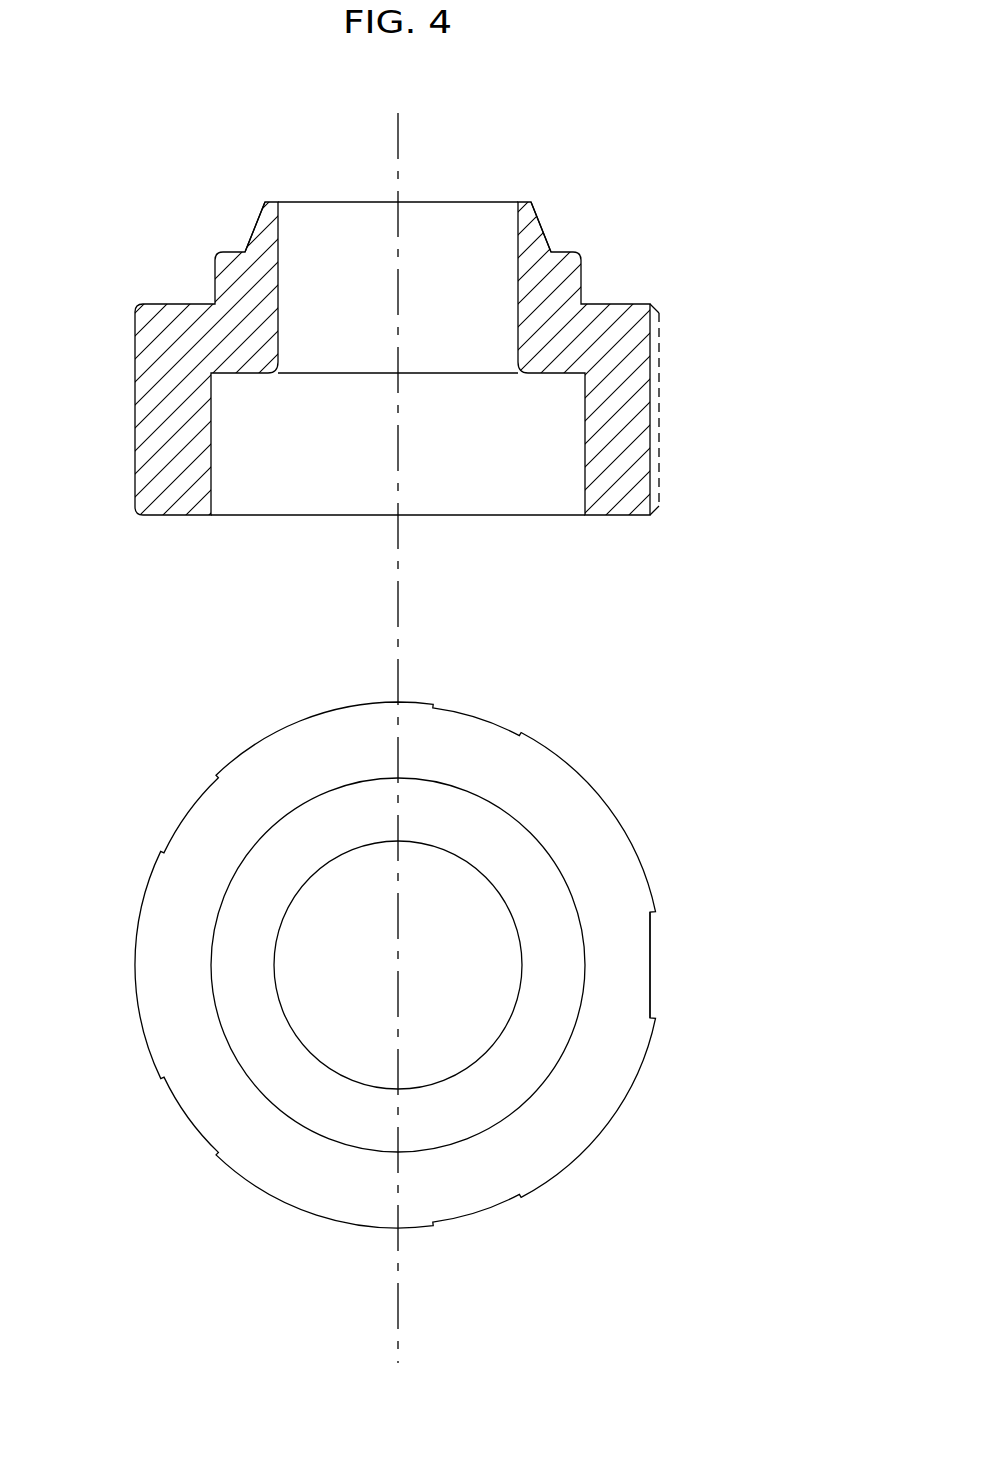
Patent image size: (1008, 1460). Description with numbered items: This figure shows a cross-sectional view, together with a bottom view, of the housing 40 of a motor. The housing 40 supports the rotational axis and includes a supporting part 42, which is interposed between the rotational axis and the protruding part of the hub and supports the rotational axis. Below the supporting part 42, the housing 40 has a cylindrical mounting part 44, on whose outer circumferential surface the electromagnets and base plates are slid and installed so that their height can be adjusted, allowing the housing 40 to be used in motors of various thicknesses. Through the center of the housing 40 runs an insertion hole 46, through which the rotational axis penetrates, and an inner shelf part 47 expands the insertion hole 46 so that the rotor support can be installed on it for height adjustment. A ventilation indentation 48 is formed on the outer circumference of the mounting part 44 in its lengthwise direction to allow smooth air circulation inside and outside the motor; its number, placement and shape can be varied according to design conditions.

The housing 40 is at (483, 690).
The supporting part 42 is at (525, 218).
The cylindrical mounting part 44 is at (617, 515).
The insertion hole 46 is at (280, 265).
The inner shelf part 47 is at (245, 375).
The ventilation indentation 48 is at (660, 440).